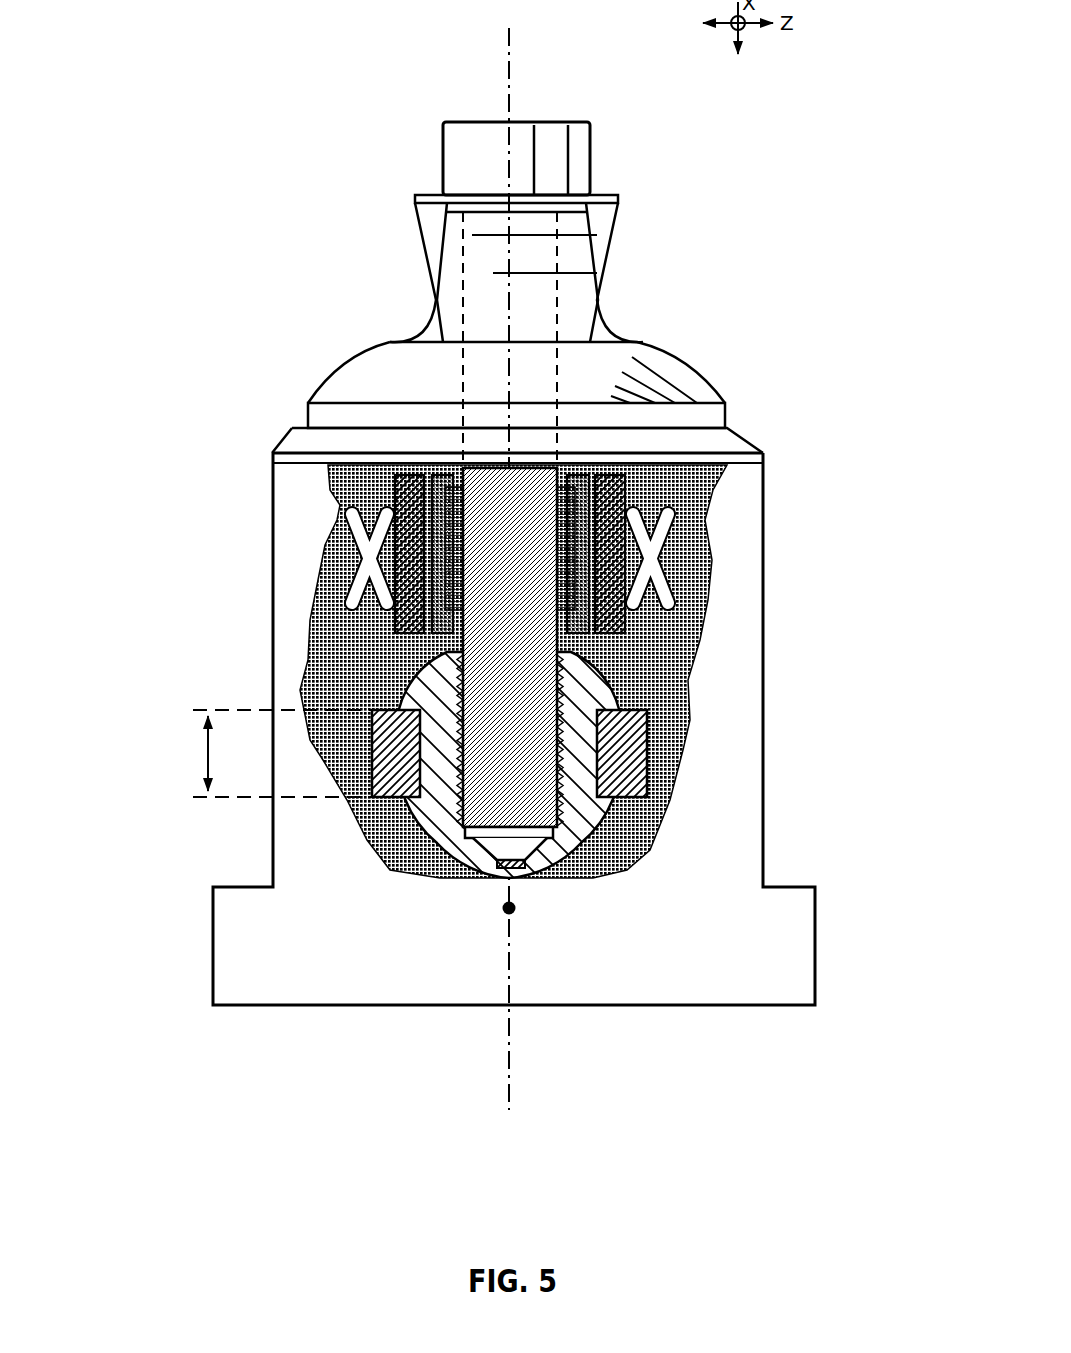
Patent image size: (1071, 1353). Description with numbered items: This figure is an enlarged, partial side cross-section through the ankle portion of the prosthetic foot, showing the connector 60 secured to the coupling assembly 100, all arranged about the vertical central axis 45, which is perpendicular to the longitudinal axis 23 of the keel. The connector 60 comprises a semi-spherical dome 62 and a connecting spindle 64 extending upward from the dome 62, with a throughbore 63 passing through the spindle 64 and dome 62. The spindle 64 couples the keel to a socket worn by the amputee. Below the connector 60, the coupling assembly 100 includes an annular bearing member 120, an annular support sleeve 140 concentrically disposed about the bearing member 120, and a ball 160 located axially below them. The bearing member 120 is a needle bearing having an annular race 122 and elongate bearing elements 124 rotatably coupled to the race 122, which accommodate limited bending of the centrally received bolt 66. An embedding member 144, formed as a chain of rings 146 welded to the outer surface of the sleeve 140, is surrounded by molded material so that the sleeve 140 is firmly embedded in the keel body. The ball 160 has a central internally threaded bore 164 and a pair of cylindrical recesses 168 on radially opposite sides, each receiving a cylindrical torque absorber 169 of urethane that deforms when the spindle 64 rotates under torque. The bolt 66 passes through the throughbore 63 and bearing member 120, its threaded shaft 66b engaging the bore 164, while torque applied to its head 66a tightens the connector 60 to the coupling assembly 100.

The longitudinal axis 23 is at (540, 932).
The central axis 45 is at (512, 72).
The connector 60 is at (680, 326).
The semi-spherical dome 62 is at (366, 377).
The throughbore 63 is at (560, 252).
The connecting spindle 64 is at (430, 228).
The bolt 66 is at (436, 133).
The head 66a is at (592, 160).
The threaded shaft 66b is at (481, 803).
The coupling assembly 100 is at (728, 640).
The bearing member 120 is at (592, 506).
The race 122 is at (436, 555).
The bearing elements 124 is at (455, 525).
The support sleeve 140 is at (319, 534).
The embedding member 144 is at (678, 547).
The rings 146 is at (355, 588).
The ball 160 is at (398, 759).
The internally threaded bore 164 is at (562, 772).
The recesses 168 is at (408, 708).
The torque absorbers 169 is at (383, 800).